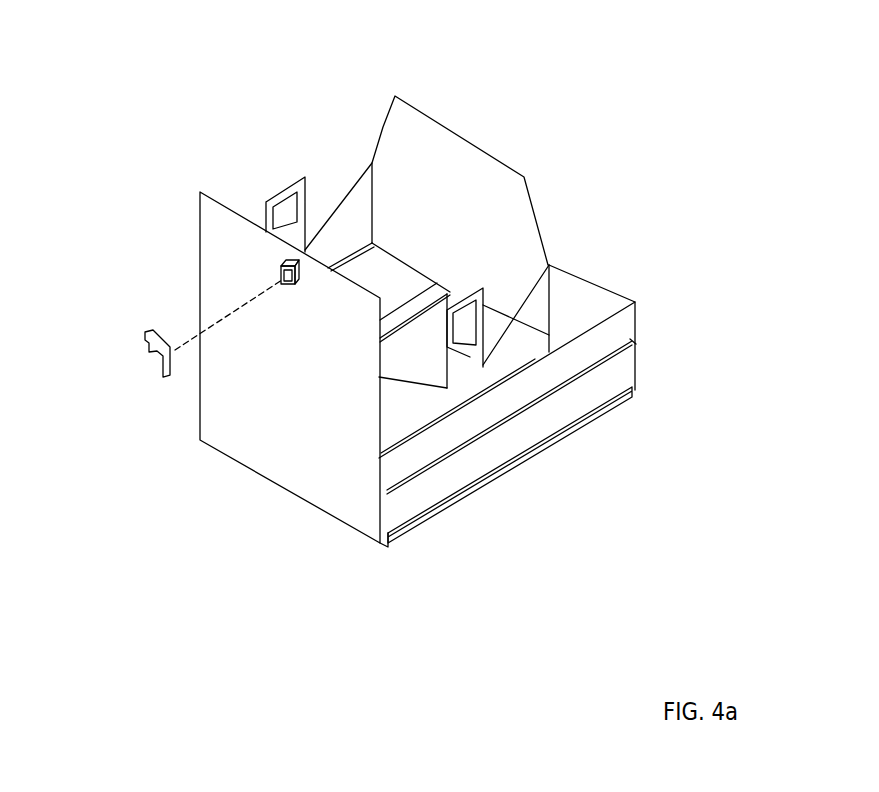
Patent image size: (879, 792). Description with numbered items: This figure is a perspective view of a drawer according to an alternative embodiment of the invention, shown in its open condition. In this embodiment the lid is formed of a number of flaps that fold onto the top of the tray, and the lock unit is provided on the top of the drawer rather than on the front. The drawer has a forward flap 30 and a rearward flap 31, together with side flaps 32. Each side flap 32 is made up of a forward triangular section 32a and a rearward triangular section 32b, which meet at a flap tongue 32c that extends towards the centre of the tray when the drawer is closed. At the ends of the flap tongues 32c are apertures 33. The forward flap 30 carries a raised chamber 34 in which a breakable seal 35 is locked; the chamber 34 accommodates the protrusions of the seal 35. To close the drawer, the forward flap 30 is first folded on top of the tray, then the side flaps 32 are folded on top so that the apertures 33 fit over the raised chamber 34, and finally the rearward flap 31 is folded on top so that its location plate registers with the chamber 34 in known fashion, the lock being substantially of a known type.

The forward flap 30 is at (215, 247).
The rearward flap 31 is at (458, 167).
The side flaps 32 is at (549, 303).
The forward triangular section 32a is at (402, 408).
The rearward triangular section 32b is at (532, 323).
The flap tongue 32c is at (467, 363).
The apertures 33 is at (462, 323).
The raised chamber 34 is at (279, 278).
The breakable seal 35 is at (155, 354).